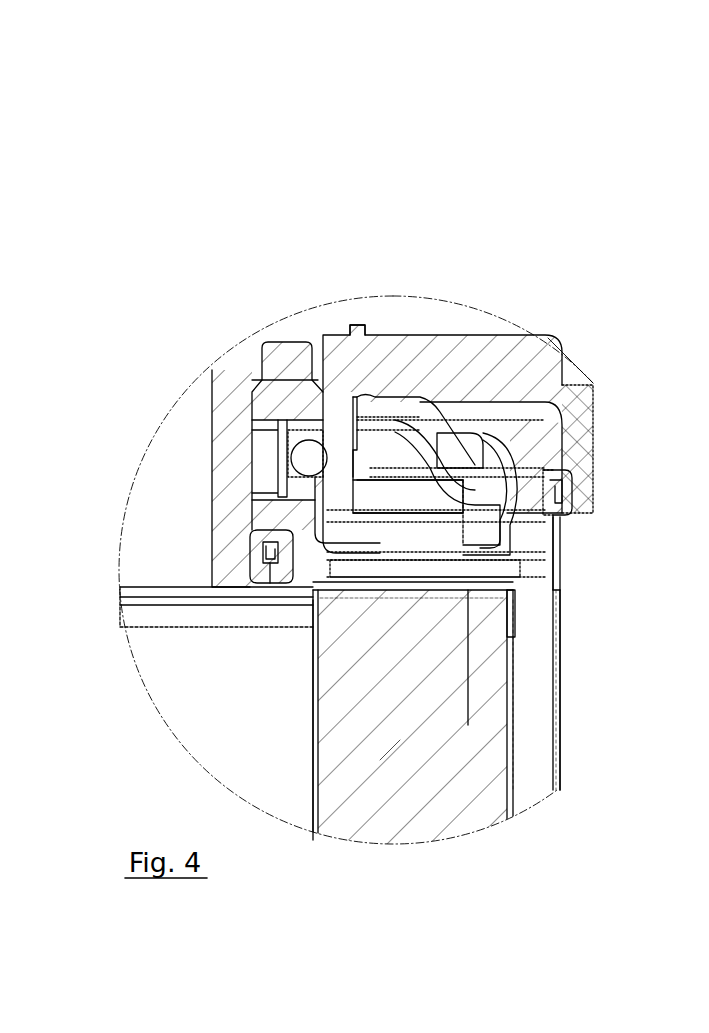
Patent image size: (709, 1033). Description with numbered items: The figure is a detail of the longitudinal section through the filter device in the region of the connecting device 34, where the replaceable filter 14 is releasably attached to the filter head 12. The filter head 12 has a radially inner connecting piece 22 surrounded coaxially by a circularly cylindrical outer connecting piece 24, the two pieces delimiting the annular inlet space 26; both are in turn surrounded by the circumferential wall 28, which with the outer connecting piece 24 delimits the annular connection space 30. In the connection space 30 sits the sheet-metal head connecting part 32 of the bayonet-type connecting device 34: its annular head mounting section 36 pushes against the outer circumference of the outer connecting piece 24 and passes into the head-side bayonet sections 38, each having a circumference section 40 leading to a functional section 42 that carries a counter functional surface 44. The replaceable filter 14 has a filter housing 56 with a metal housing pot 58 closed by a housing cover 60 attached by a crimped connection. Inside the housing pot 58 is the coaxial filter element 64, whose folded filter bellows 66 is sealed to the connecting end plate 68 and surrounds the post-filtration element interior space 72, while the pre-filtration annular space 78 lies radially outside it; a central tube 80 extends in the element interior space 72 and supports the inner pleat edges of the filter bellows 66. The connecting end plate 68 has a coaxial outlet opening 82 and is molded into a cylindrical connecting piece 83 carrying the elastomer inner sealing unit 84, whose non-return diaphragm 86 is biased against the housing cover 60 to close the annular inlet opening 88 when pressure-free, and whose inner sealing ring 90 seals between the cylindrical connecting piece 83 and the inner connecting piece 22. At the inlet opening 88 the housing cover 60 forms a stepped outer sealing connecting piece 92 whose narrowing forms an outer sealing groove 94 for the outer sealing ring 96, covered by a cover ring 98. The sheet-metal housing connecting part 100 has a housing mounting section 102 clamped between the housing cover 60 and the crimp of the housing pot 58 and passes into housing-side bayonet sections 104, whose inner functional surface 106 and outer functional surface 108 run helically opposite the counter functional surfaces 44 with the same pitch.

The filter head 12 is at (215, 357).
The replaceable filter 14 is at (573, 760).
The inner connecting piece 22 is at (215, 492).
The outer connecting piece 24 is at (340, 372).
The annular inlet space 26 is at (300, 458).
The circumferential wall 28 is at (590, 463).
The connection space 30 is at (548, 440).
The head connecting part 32 is at (400, 400).
The connecting device 34 is at (505, 446).
The head mounting section 36 is at (356, 326).
The head-side bayonet section 38 is at (445, 445).
The circumference section 40 is at (425, 430).
The functional section 42 is at (450, 570).
The counter functional surface 44 is at (478, 440).
The filter housing 56 is at (560, 722).
The housing pot 58 is at (560, 683).
The housing cover 60 is at (560, 572).
The filter element 64 is at (495, 812).
The filter bellows 66 is at (408, 838).
The connecting end plate 68 is at (515, 606).
The element interior space 72 is at (155, 686).
The annular space 78 is at (530, 792).
The central tube 80 is at (312, 770).
The outlet opening 82 is at (150, 600).
The cylindrical connecting piece 83 is at (275, 585).
The inner sealing unit 84 is at (262, 578).
The non-return diaphragm 86 is at (330, 585).
The inlet opening 88 is at (318, 570).
The inner sealing ring 90 is at (262, 552).
The outer sealing connecting piece 92 is at (290, 500).
The outer sealing groove 94 is at (307, 440).
The outer sealing ring 96 is at (262, 450).
The cover ring 98 is at (290, 392).
The housing connecting part 100 is at (510, 510).
The housing mounting section 102 is at (558, 516).
The housing-side bayonet section 104 is at (540, 400).
The inner functional surface 106 is at (468, 620).
The outer functional surface 108 is at (500, 440).